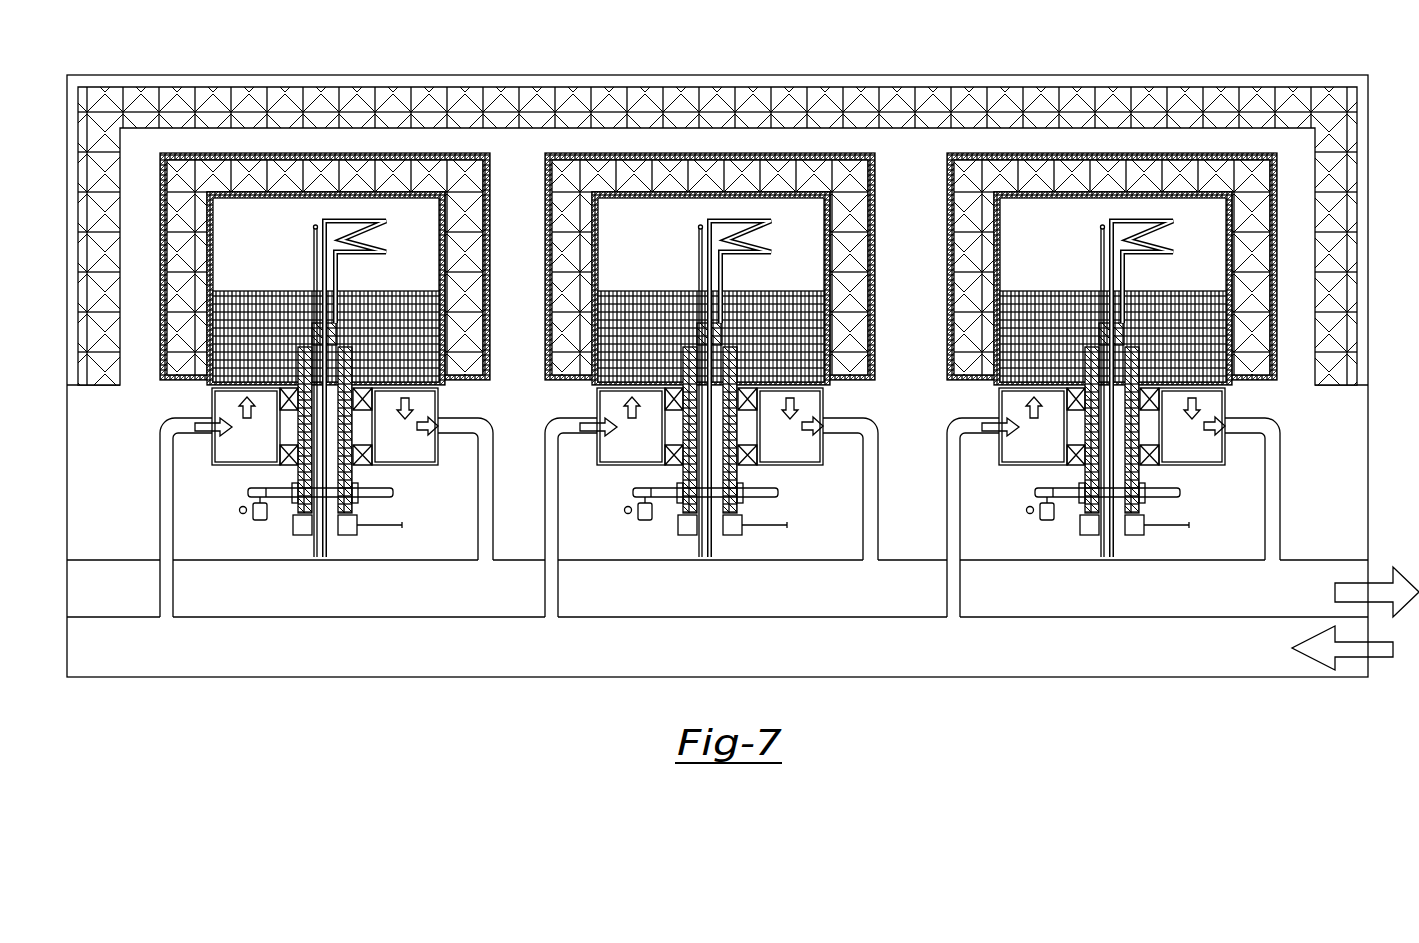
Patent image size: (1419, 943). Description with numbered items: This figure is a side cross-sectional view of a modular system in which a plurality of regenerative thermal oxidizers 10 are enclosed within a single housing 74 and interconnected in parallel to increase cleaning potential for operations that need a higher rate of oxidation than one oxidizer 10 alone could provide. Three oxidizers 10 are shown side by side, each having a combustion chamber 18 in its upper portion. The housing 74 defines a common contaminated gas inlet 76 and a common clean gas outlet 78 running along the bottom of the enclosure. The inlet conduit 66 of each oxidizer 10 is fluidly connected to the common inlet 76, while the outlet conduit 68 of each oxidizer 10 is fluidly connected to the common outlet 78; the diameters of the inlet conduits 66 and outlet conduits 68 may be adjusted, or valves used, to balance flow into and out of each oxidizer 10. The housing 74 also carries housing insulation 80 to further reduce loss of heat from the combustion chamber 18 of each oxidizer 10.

The regenerative thermal oxidizer 10 is at (718, 345).
The combustion chamber 18 is at (254, 246).
The inlet conduit 66 is at (158, 470).
The outlet conduit 68 is at (478, 470).
The housing 74 is at (478, 75).
The common contaminated gas inlet 76 is at (1180, 656).
The common clean gas outlet 78 is at (1180, 597).
The housing insulation 80 is at (856, 115).